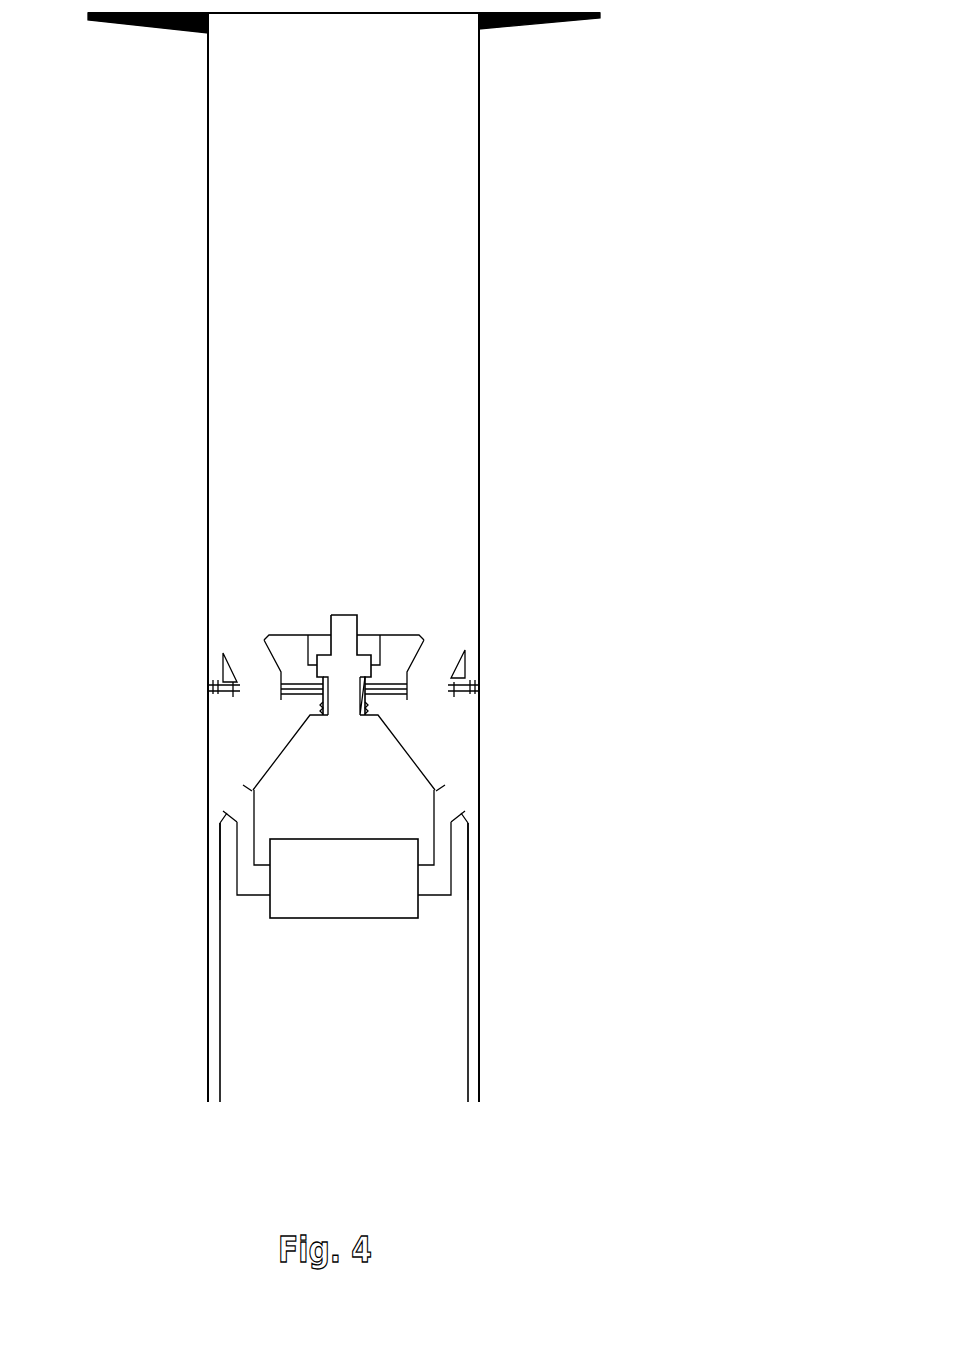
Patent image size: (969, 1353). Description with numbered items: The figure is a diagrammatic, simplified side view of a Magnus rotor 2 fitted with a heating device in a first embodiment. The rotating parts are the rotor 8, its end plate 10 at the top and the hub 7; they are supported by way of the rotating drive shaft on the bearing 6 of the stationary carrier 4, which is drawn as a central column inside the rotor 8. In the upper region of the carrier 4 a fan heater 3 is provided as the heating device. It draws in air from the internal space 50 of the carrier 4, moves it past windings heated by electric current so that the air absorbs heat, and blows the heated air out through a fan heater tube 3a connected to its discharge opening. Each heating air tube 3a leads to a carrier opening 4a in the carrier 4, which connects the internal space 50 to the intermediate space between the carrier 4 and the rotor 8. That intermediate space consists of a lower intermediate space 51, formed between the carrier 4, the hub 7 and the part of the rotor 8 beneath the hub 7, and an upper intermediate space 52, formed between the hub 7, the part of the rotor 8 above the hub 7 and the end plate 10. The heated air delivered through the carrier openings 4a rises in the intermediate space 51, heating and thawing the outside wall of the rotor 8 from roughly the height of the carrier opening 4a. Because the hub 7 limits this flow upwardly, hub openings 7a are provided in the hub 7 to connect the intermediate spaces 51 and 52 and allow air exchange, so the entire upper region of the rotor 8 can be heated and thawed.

The Magnus rotor 2 is at (105, 200).
The fan heater 3 is at (343, 905).
The fan heater tube 3a is at (253, 887).
The carrier 4 is at (302, 1080).
The carrier opening 4a is at (238, 805).
The bearing 6 is at (358, 670).
The hub 7 is at (295, 652).
The hub opening 7a is at (243, 650).
The rotor 8 is at (478, 300).
The end plate 10 is at (530, 25).
The internal space 50 is at (435, 1052).
The intermediate space 51 is at (455, 738).
The intermediate space 52 is at (430, 477).